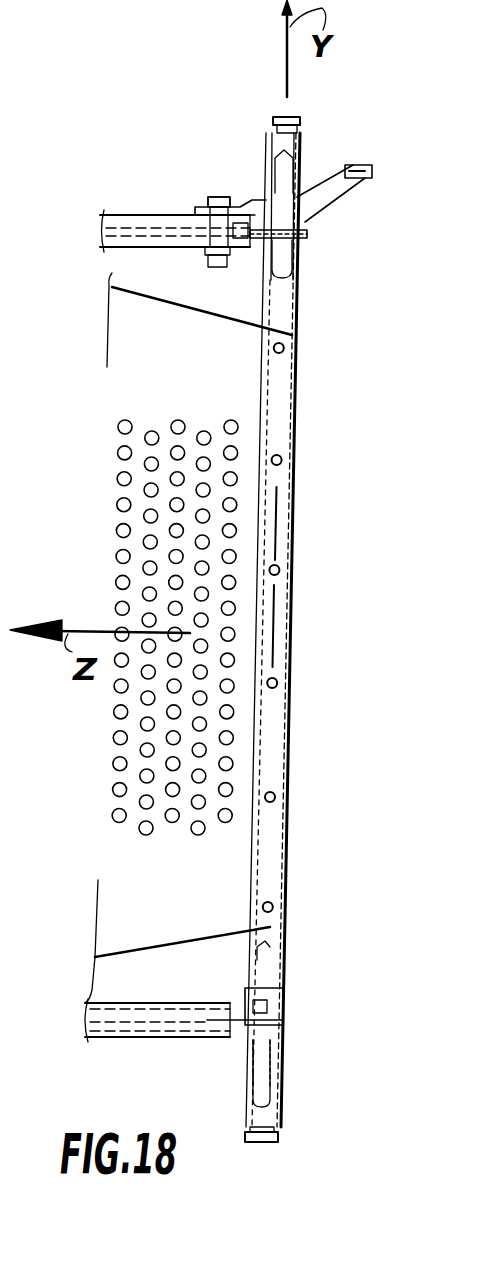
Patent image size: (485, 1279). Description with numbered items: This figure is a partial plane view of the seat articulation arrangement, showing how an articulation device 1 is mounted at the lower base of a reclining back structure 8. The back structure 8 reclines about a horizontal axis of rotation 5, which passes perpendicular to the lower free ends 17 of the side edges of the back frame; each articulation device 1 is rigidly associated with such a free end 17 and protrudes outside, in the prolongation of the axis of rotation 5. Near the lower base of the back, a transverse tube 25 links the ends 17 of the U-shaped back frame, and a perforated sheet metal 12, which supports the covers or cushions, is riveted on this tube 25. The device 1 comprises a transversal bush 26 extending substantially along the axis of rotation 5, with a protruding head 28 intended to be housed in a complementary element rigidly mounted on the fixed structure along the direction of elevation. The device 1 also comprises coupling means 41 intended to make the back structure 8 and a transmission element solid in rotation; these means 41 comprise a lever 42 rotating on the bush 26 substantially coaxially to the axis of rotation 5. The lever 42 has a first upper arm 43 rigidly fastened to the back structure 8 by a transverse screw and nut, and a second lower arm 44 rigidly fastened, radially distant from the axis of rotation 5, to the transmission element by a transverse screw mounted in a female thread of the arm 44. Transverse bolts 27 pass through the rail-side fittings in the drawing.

The articulation device 1 is at (222, 125).
The axis of rotation 5 is at (275, 530).
The back structure 8 is at (160, 385).
The perforated sheet metal 12 is at (143, 776).
The lower free ends 17 is at (172, 233).
The transverse tube 25 is at (260, 955).
The transversal bush 26 is at (278, 144).
The fastening bolt 27 is at (318, 243).
The protruding head 28 is at (270, 118).
The coupling means 41 is at (180, 195).
The lever 42 is at (219, 202).
The first upper arm 43 is at (253, 207).
The second lower arm 44 is at (330, 197).